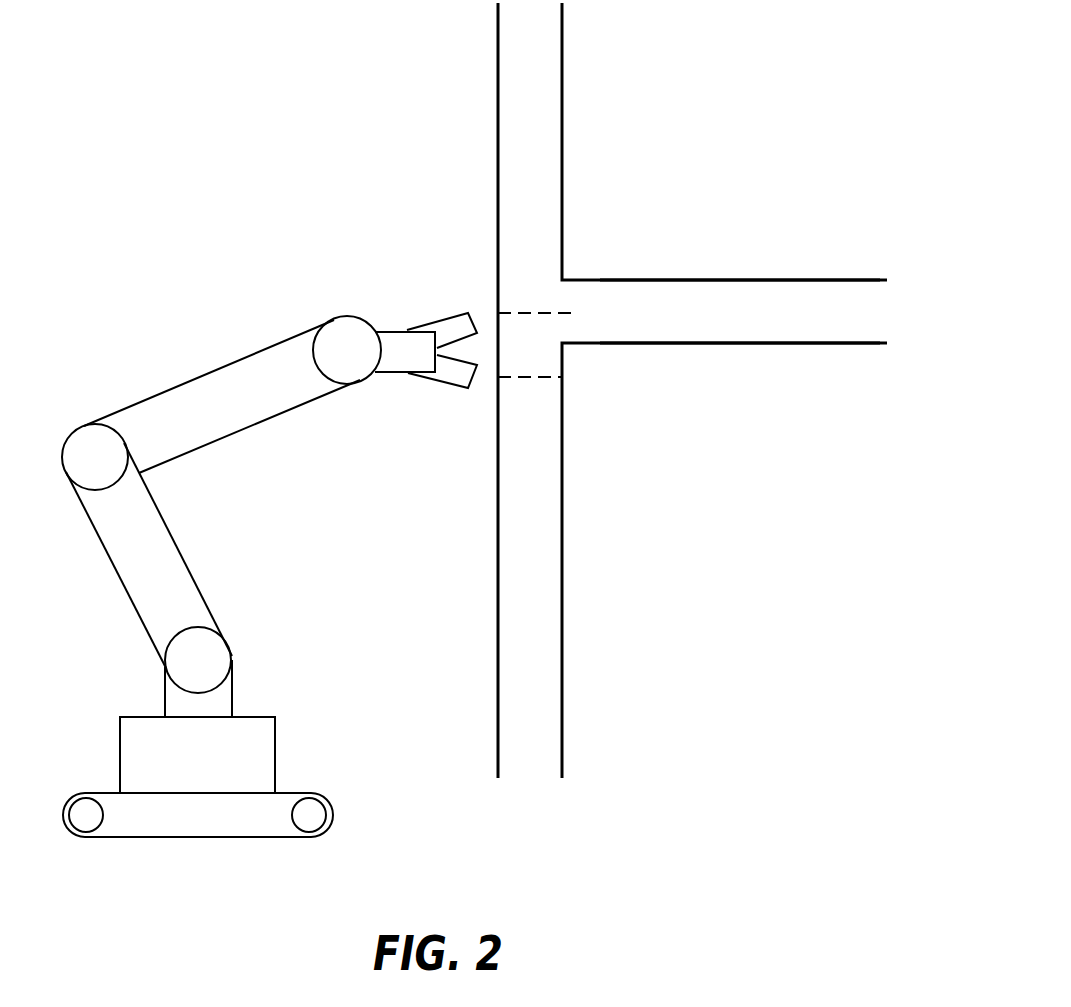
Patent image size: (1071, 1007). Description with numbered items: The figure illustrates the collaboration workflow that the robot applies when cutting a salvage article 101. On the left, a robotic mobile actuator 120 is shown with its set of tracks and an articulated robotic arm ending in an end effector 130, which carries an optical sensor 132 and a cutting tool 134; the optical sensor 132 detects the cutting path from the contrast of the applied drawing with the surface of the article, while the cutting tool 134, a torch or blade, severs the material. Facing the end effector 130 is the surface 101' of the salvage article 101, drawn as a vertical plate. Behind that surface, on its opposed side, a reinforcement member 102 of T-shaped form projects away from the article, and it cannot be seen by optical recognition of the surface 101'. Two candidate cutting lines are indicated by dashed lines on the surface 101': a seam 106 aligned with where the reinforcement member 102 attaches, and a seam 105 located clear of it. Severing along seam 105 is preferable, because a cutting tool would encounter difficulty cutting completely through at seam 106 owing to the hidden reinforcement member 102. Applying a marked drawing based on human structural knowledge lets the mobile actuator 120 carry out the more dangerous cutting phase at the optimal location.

The surface 101' is at (440, 390).
The salvage article 101 is at (713, 390).
The reinforcement member 102 is at (773, 310).
The seam 105 is at (537, 378).
The seam 106 is at (557, 308).
The mobile actuator 120 is at (146, 350).
The end effector 130 is at (388, 330).
The optical sensor 132 is at (460, 313).
The cutting tool 134 is at (445, 385).